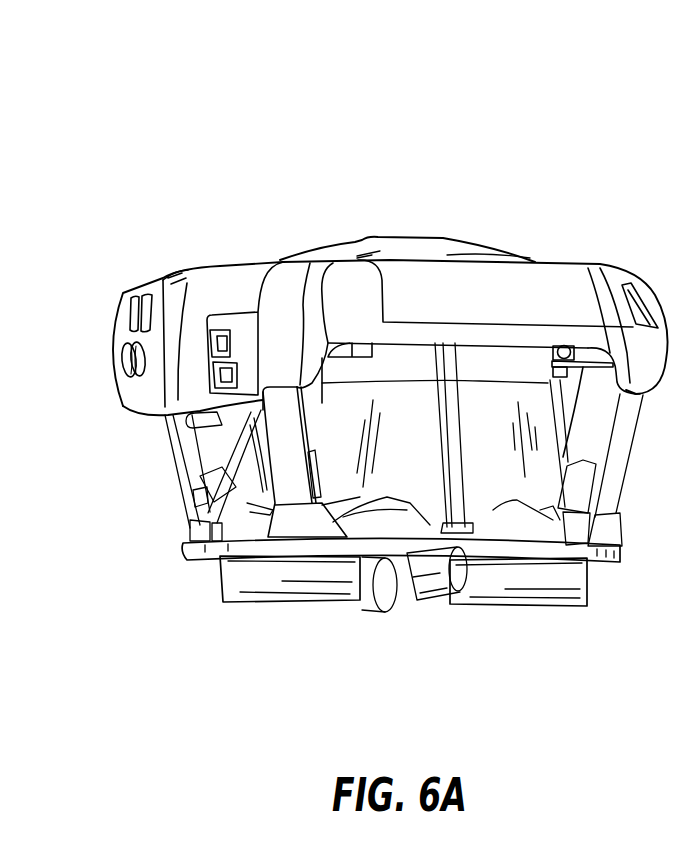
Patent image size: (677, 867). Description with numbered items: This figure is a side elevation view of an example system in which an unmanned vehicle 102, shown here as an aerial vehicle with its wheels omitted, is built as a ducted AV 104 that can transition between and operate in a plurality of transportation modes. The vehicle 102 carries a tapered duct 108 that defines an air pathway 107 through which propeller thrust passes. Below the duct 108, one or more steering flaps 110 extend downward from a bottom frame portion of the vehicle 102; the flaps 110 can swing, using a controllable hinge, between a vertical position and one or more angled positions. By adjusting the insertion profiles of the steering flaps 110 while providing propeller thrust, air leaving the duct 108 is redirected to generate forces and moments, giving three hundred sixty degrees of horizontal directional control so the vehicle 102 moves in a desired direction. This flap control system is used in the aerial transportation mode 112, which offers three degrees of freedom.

The vehicle 102 is at (214, 78).
The ducted AV 104 is at (257, 269).
The air pathway 107 is at (406, 220).
The duct 108 is at (430, 470).
The flaps 110 is at (262, 583).
The aerial transportation mode 112 is at (531, 655).